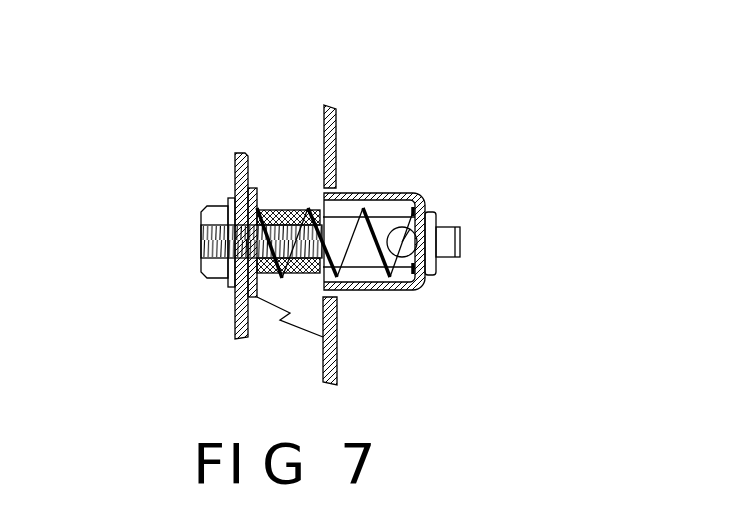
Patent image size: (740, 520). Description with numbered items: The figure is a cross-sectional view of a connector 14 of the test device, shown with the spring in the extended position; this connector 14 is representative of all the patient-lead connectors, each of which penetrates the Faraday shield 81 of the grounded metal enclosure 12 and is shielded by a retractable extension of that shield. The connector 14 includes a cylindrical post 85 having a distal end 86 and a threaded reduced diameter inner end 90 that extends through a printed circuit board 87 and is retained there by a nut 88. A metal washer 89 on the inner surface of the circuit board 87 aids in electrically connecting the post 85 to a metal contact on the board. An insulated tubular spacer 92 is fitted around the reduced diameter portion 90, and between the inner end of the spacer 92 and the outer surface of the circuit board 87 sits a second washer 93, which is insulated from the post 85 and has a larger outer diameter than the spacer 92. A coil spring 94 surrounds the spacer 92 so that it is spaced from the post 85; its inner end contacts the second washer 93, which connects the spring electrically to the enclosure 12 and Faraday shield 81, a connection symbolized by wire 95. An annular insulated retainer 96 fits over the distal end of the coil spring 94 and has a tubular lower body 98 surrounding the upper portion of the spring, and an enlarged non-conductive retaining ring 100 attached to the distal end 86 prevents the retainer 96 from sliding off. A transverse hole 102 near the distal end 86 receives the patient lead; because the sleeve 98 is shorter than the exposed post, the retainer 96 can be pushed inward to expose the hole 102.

The enclosure 12 is at (343, 112).
The connector 14 is at (433, 295).
The Faraday shield 81 is at (335, 157).
The cylindrical post 85 is at (385, 218).
The distal end 86 is at (425, 255).
The printed circuit board 87 is at (233, 153).
The nut 88 is at (200, 273).
The metal washer 89 is at (227, 283).
The threaded reduced diameter inner end 90 is at (197, 232).
The insulated tubular spacer 92 is at (285, 206).
The second washer 93 is at (251, 190).
The coil spring 94 is at (340, 288).
The wire 95 is at (288, 323).
The annular insulated retainer 96 is at (425, 202).
The tubular lower body 98 is at (383, 293).
The retaining ring 100 is at (435, 215).
The transverse hole 102 is at (402, 242).